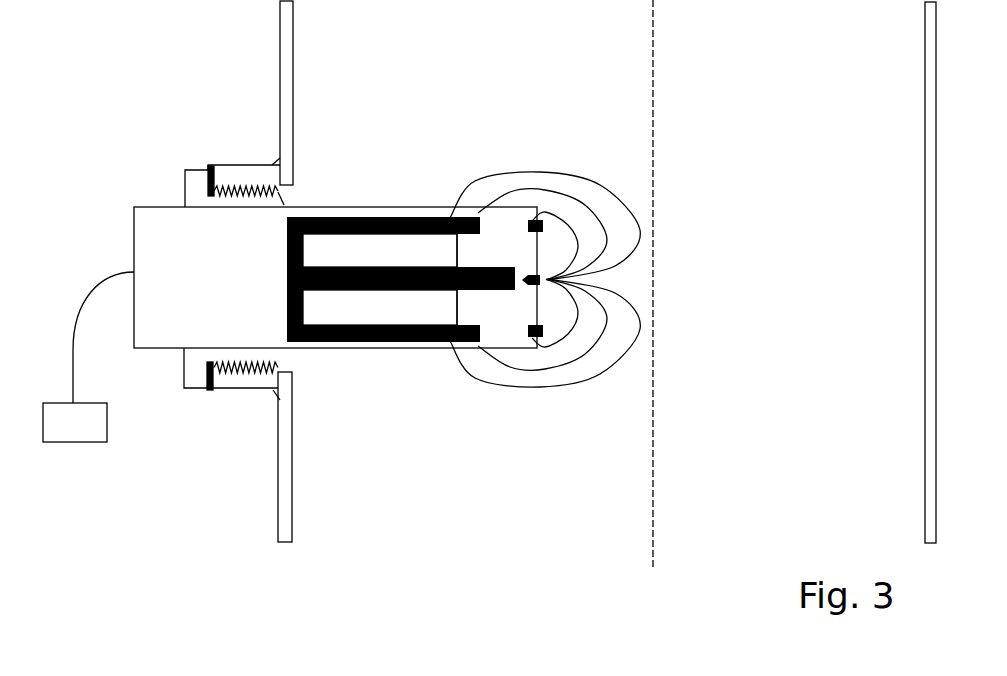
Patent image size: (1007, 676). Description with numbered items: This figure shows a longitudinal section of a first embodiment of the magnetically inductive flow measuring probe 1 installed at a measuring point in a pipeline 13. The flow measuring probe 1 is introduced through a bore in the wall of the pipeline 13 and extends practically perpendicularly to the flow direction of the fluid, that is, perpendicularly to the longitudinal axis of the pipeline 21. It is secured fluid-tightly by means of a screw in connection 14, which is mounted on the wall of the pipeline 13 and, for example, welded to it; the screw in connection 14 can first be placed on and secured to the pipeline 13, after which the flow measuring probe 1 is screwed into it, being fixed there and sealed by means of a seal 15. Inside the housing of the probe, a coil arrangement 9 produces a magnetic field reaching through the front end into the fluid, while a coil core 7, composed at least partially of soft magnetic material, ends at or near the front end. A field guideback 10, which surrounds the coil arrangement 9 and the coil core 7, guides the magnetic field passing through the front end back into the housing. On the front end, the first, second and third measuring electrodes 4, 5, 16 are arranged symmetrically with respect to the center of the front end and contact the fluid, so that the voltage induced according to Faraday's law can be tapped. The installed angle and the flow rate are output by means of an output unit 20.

The flow measuring probe 1 is at (87, 207).
The first measuring electrode 4 is at (540, 222).
The second measuring electrode 5 is at (541, 287).
The coil core 7 is at (408, 290).
The coil arrangement 9 is at (363, 252).
The field guideback 10 is at (408, 217).
The pipeline 13 is at (285, 137).
The screw in connection 14 is at (242, 175).
The seal 15 is at (210, 167).
The third measuring electrode 16 is at (550, 287).
The output unit 20 is at (88, 357).
The longitudinal axis of the pipeline 21 is at (652, 82).